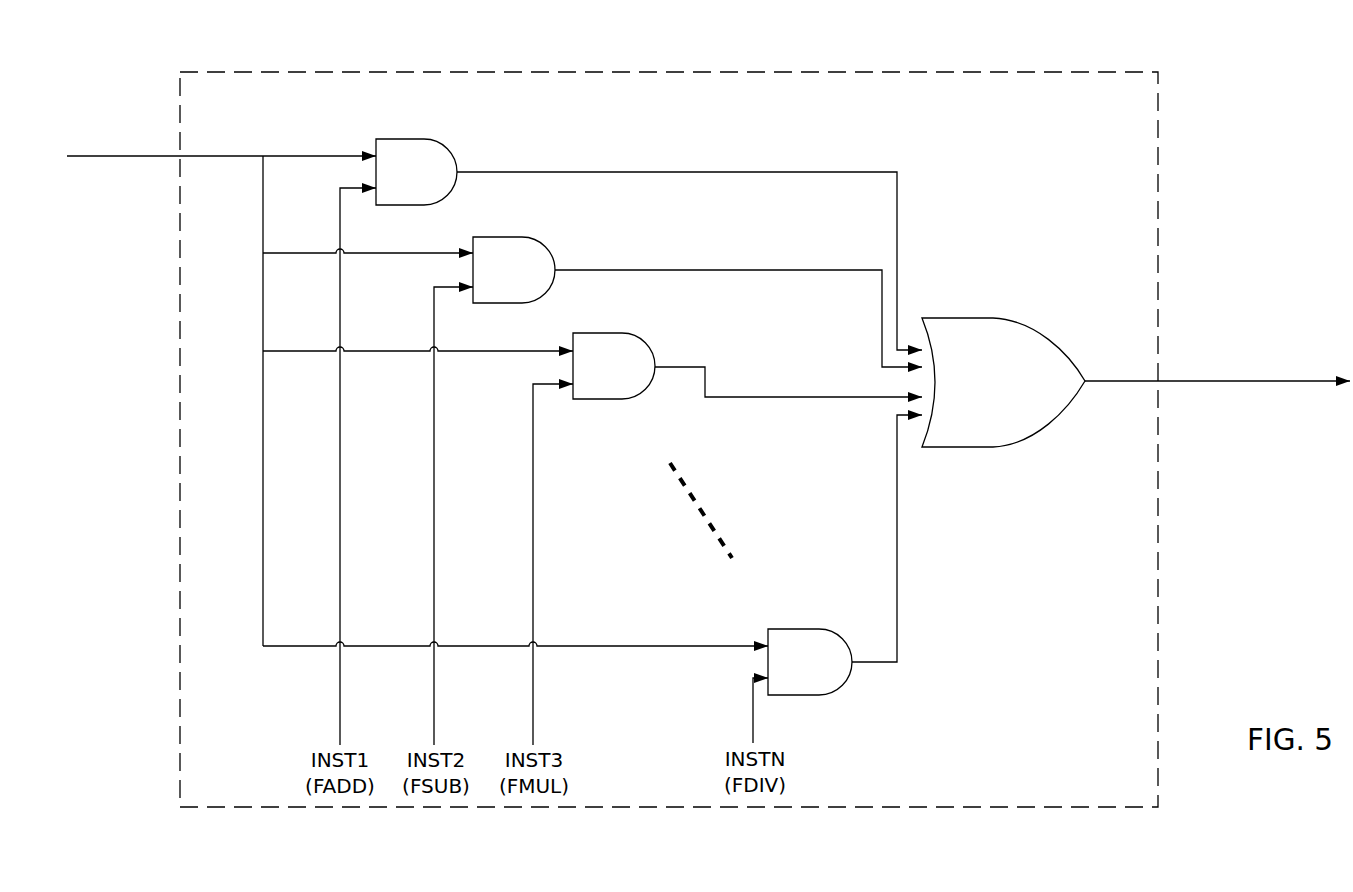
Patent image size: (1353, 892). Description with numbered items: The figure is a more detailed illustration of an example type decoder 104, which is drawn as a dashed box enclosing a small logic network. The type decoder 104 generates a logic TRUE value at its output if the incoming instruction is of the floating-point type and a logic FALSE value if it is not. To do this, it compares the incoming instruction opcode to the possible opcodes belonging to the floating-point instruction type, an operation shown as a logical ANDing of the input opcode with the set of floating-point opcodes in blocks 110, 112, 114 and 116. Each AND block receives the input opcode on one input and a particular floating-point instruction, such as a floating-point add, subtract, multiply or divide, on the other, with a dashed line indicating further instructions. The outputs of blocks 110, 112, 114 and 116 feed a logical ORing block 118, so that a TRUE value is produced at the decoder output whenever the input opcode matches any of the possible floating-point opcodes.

The type decoder 104 is at (1162, 602).
The logical AND block 110 is at (447, 143).
The logical AND block 112 is at (547, 243).
The logical AND block 114 is at (645, 342).
The logical AND block 116 is at (785, 629).
The logical OR block 118 is at (1037, 333).